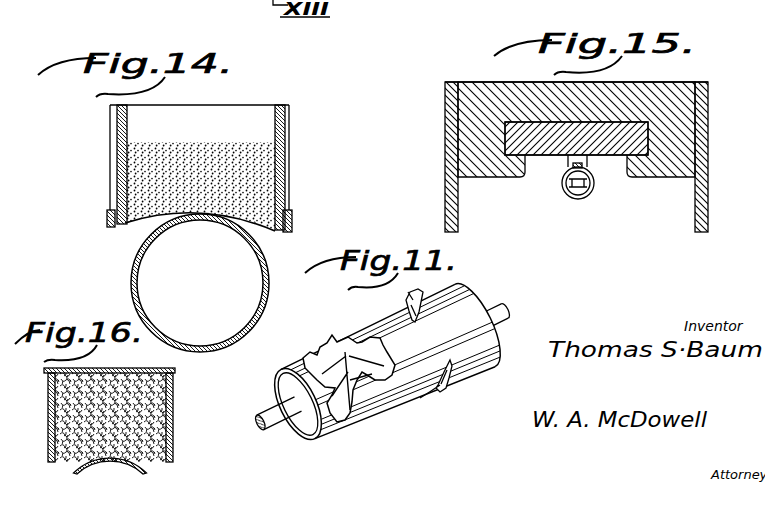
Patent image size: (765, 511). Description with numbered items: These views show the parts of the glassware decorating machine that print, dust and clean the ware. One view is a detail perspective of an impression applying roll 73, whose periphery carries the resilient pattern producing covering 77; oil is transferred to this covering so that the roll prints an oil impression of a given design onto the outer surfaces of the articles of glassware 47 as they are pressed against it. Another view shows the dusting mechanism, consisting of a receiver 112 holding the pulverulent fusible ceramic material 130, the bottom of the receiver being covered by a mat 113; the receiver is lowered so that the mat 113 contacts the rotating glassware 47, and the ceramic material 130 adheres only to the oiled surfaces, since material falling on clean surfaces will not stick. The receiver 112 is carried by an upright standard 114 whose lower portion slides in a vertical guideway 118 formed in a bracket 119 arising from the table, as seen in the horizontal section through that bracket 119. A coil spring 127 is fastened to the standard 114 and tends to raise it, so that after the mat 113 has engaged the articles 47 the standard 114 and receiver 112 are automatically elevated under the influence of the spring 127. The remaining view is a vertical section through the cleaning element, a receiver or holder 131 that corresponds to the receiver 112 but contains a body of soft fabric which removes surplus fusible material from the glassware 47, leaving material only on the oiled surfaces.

In FIG. 14, the receiver 112 is at (293, 123).
In FIG. 14, the pulverulent fusible ceramic material 130 is at (260, 166).
In FIG. 14, the mat 113 is at (133, 228).
In FIG. 14, the articles of glassware 47 is at (262, 262).
In FIG. 16, the articles of glassware 47 is at (148, 473).
In FIG. 15, the bracket 119 is at (477, 71).
In FIG. 15, the vertical guideway 118 is at (653, 145).
In FIG. 15, the upright standard 114 is at (640, 135).
In FIG. 15, the coil spring 127 is at (594, 192).
In FIG. 16, the receiver or holder 131 is at (172, 418).
In FIG. 11, the resilient pattern producing covering 77 is at (332, 338).
In FIG. 11, the impression applying rolls 73 is at (282, 393).